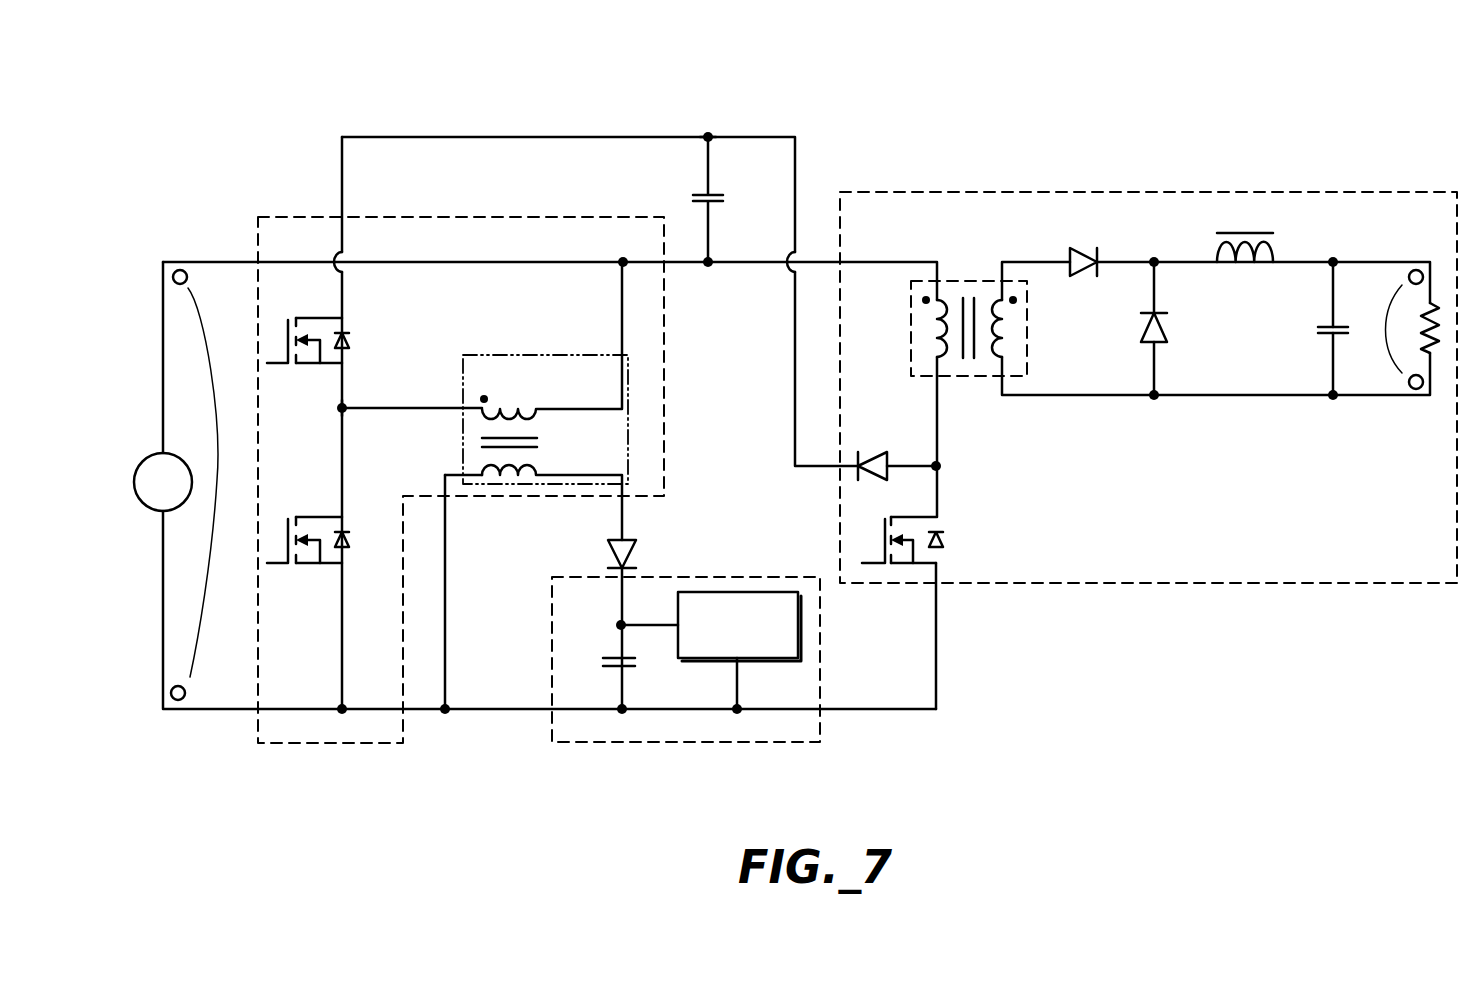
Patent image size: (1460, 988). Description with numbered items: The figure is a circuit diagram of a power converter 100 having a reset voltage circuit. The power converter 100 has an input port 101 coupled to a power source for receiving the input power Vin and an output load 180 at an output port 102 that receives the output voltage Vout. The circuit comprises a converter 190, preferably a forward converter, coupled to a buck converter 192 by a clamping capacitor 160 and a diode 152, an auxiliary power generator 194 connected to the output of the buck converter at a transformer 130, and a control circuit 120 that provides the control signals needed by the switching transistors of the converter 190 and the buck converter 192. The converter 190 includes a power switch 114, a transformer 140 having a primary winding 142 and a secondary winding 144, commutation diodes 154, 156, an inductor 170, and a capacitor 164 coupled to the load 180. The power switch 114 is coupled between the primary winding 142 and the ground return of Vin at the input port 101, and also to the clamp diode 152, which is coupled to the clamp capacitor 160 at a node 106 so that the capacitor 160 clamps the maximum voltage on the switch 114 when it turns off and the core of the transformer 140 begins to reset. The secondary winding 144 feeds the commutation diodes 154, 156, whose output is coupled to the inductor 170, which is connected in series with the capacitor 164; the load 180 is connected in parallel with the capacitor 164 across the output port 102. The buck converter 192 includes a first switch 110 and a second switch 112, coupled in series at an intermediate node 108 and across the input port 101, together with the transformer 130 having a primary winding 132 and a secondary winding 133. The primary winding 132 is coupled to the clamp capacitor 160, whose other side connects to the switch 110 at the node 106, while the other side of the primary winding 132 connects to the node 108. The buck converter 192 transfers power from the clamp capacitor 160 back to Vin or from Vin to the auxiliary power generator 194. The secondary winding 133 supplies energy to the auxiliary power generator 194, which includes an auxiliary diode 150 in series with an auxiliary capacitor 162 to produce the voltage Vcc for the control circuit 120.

The power converter 100 is at (1208, 74).
The input port 101 is at (202, 305).
The output port 102 is at (1388, 305).
The node 106 is at (708, 133).
The intermediate node 108 is at (344, 412).
The first switch 110 is at (282, 360).
The second switch 112 is at (282, 560).
The power switch 114 is at (877, 560).
The control circuit 120 is at (743, 590).
The transformer 130 is at (628, 368).
The primary winding 132 is at (522, 416).
The secondary winding 133 is at (518, 468).
The transformer 140 is at (970, 281).
The primary winding 142 is at (942, 337).
The secondary winding 144 is at (999, 337).
The auxiliary diode 150 is at (635, 550).
The clamp diode 152 is at (888, 460).
The commutation diode 154 is at (1100, 258).
The commutation diode 156 is at (1167, 327).
The clamp capacitor 160 is at (700, 193).
The auxiliary capacitor 162 is at (615, 668).
The capacitor 164 is at (1327, 340).
The inductor 170 is at (1245, 232).
The output load 180 is at (1443, 330).
The converter 190 is at (1122, 192).
The buck converter 192 is at (520, 217).
The auxiliary power generator 194 is at (628, 742).